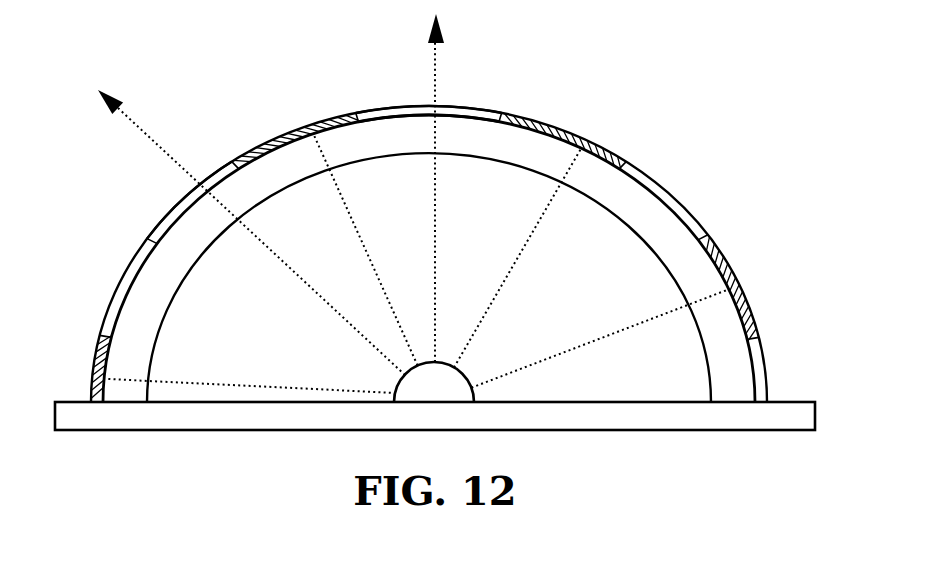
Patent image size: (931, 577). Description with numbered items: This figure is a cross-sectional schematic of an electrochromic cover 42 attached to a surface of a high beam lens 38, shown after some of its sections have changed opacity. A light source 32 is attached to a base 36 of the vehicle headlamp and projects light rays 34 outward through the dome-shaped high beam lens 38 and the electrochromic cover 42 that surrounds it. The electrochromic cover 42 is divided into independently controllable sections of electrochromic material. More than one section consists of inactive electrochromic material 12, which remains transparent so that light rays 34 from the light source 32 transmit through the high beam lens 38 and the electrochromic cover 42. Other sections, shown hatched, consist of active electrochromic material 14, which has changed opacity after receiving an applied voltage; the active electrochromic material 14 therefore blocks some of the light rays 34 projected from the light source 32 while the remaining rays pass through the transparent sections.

The inactive electrochromic material 12 is at (388, 116).
The active electrochromic material 14 is at (264, 148).
The light source 32 is at (460, 394).
The light rays 34 is at (162, 152).
The base 36 is at (205, 432).
The high beam lens 38 is at (645, 206).
The electrochromic cover 42 is at (488, 112).